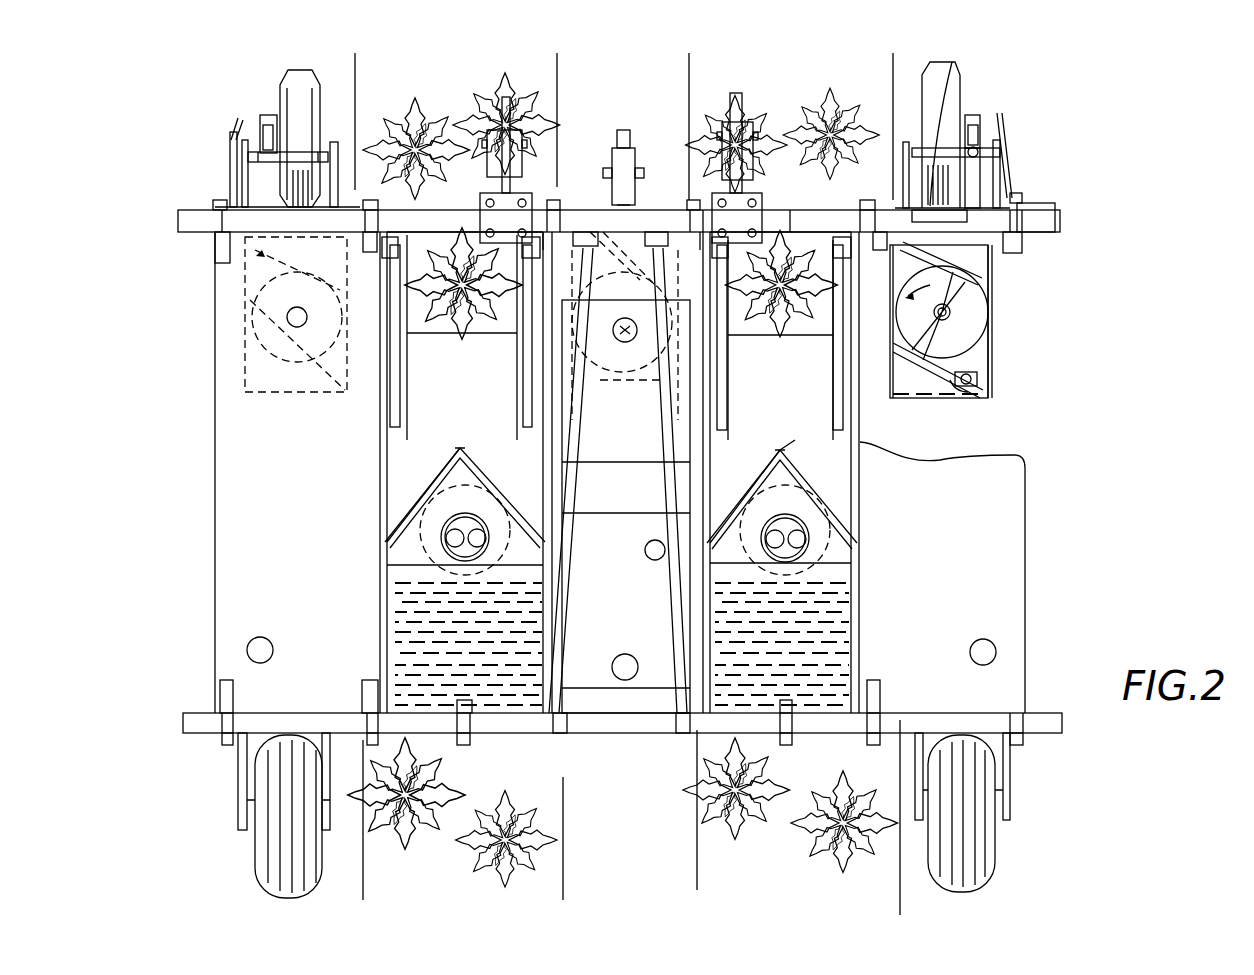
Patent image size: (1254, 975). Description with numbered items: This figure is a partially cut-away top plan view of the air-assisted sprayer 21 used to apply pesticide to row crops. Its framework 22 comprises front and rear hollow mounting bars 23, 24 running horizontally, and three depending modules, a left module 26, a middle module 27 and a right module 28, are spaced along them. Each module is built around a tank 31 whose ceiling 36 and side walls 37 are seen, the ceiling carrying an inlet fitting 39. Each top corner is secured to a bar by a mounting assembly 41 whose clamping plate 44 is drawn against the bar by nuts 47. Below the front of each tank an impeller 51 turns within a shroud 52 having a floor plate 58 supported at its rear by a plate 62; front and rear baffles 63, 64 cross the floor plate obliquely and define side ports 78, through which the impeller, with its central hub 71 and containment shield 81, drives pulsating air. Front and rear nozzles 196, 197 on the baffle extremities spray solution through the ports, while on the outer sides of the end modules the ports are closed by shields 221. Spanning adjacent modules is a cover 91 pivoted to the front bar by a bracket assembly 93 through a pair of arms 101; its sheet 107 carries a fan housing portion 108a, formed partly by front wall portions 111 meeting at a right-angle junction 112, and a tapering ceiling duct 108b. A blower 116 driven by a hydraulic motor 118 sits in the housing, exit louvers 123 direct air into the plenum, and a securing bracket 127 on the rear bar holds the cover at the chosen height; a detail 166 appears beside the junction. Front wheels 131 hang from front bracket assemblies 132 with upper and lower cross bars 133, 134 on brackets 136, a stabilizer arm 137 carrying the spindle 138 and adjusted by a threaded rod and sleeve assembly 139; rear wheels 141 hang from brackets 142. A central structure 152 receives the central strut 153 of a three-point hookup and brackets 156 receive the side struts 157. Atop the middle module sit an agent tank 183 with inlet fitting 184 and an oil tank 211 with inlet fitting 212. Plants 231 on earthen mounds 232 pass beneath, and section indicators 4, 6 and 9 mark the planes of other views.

The air-assisted sprayer 21 is at (1142, 93).
The framework 22 is at (1057, 210).
The front mounting bar 23 is at (180, 220).
The rear mounting bar 24 is at (1035, 733).
The left module 26 is at (216, 450).
The middle module 27 is at (612, 570).
The right module 28 is at (1030, 585).
The tank 31 is at (215, 543).
The ceiling 36 is at (313, 474).
The side walls 37 is at (215, 350).
The inlet fittings 39 is at (262, 637).
The mounting assembly 41 is at (215, 203).
The clamping plate 44 is at (222, 745).
The nuts 47 is at (232, 760).
The impeller 51 is at (245, 300).
The shroud 52 is at (1003, 333).
The floor plate 58 is at (925, 392).
The rear plate 62 is at (976, 392).
The front baffle 63 is at (290, 272).
The rear baffle 64 is at (275, 385).
The central hub 71 is at (941, 336).
The exit port 78 is at (835, 345).
The containment shield 81 is at (1024, 289).
The cover 91 is at (473, 432).
The bracket assembly 93 is at (360, 235).
The arms 101 is at (415, 385).
The sheet 107 is at (392, 478).
The fan housing portion 108a is at (405, 515).
The high pressure ceiling duct 108b is at (400, 572).
The front wall portions 111 is at (432, 482).
The right-angle junction of front wall portions 112 is at (462, 447).
The blower 116 is at (435, 530).
The hydraulic motor 118 is at (488, 540).
The exit louvers 123 is at (395, 650).
The securing bracket 127 is at (465, 746).
The front wheel 131 is at (317, 92).
The front bracket assembly 132 is at (264, 114).
The upper cross bar 133 is at (300, 150).
The lower cross bar 134 is at (985, 195).
The brackets 136 is at (232, 170).
The stabilizer arm 137 is at (240, 120).
The spindle 138 is at (283, 100).
The acme threaded rod and sleeve assembly 139 is at (258, 128).
The rear wheels 141 is at (258, 862).
The rear wheel brackets 142 is at (240, 825).
The central structure 152 is at (640, 160).
The central strut 153 is at (617, 130).
The side strut brackets 156 is at (490, 130).
The side struts 157 is at (738, 95).
The pivot 166 is at (785, 452).
The agent tank 183 is at (612, 720).
The inlet fitting 184 is at (614, 655).
The front nozzles 196 is at (1005, 245).
The rear nozzles 197 is at (1076, 333).
The drive oil tank 211 is at (598, 468).
The inlet fitting 212 is at (630, 392).
The shields 221 is at (995, 362).
The plants 231 is at (815, 90).
The earthen mounds 232 is at (565, 795).
The section line 4 is at (490, 340).
The section line 6 is at (805, 110).
The section line 9 is at (918, 320).